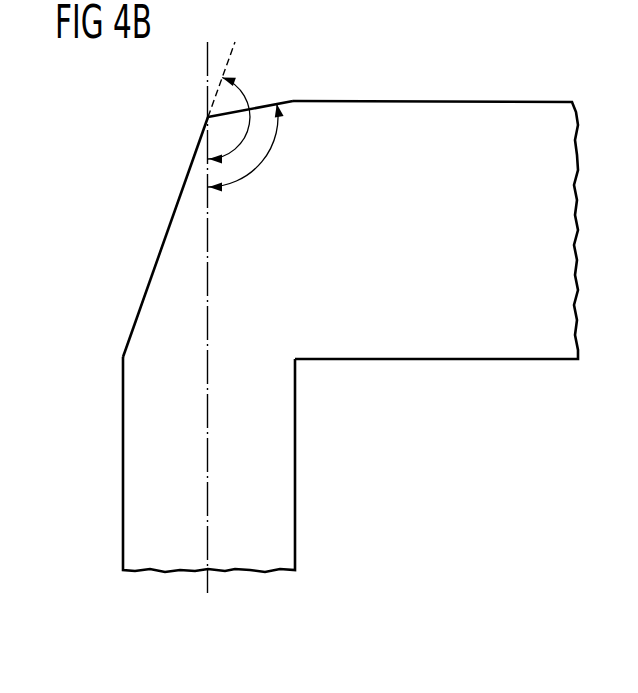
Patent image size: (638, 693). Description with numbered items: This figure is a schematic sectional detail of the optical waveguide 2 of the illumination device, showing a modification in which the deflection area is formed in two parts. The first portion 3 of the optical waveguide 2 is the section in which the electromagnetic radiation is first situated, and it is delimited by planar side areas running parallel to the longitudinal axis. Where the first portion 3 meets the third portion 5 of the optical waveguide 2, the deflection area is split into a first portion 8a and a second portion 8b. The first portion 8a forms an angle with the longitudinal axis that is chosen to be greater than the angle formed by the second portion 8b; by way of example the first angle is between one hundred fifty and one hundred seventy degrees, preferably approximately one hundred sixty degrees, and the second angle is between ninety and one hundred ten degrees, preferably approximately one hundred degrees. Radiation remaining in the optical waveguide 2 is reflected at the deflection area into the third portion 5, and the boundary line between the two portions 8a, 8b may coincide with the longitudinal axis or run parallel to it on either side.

The optical waveguide 2 is at (310, 303).
The first portion of the optical waveguide 3 is at (132, 473).
The third portion of the optical waveguide 5 is at (443, 113).
The first portion of the deflection area 8a is at (163, 237).
The second portion of the deflection area 8b is at (263, 106).